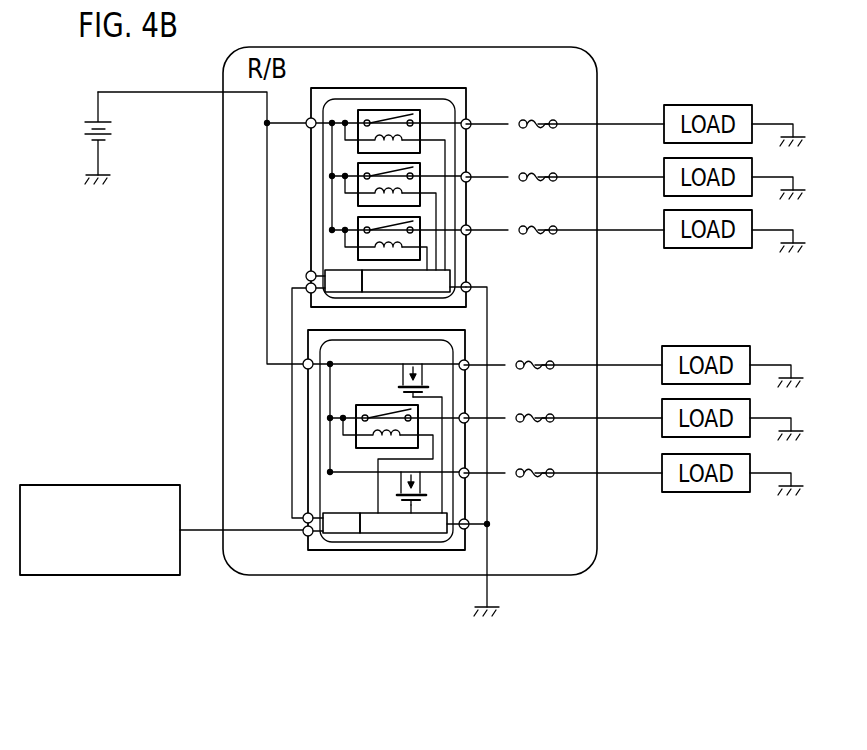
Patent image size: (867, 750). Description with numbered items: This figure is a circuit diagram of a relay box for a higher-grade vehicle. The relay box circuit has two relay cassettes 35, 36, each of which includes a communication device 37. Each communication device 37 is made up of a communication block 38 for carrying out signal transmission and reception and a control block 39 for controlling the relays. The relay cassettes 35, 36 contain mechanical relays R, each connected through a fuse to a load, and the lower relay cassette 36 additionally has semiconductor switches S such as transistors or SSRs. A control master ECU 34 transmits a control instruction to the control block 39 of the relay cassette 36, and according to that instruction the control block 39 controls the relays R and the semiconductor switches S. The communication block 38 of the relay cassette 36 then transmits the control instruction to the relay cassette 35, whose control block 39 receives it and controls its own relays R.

The control master ECU 34 is at (115, 484).
The relay cassette 35 is at (468, 92).
The relay cassette 36 is at (466, 447).
The communication device 37 is at (455, 461).
The communication block 38 is at (348, 290).
The control block 39 is at (445, 274).
The mechanical relay R is at (357, 110).
The semiconductor switch S is at (424, 388).